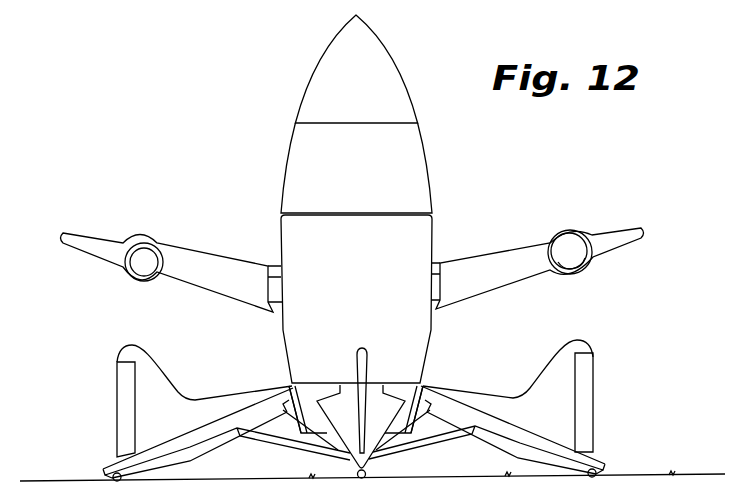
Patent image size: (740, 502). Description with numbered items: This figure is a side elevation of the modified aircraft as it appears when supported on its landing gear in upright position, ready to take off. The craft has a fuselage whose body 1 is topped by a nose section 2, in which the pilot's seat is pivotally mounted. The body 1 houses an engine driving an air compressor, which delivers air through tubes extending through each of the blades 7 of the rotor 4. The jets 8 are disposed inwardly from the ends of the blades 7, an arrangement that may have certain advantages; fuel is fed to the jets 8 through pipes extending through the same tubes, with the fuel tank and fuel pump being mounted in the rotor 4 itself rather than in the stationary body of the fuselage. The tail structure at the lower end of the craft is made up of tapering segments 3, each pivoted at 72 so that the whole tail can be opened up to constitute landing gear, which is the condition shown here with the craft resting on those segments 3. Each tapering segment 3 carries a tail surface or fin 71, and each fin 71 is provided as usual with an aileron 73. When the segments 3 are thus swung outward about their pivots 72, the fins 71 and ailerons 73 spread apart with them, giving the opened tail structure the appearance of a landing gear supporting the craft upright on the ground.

The body 1 is at (413, 183).
The nose section 2 is at (393, 98).
The tapering segments 3 is at (210, 445).
The rotor 4 is at (290, 228).
The blades 7 is at (230, 280).
The jets 8 is at (147, 243).
The tail surface or fin 71 is at (167, 397).
The pivot 72 is at (292, 385).
The aileron 73 is at (122, 405).